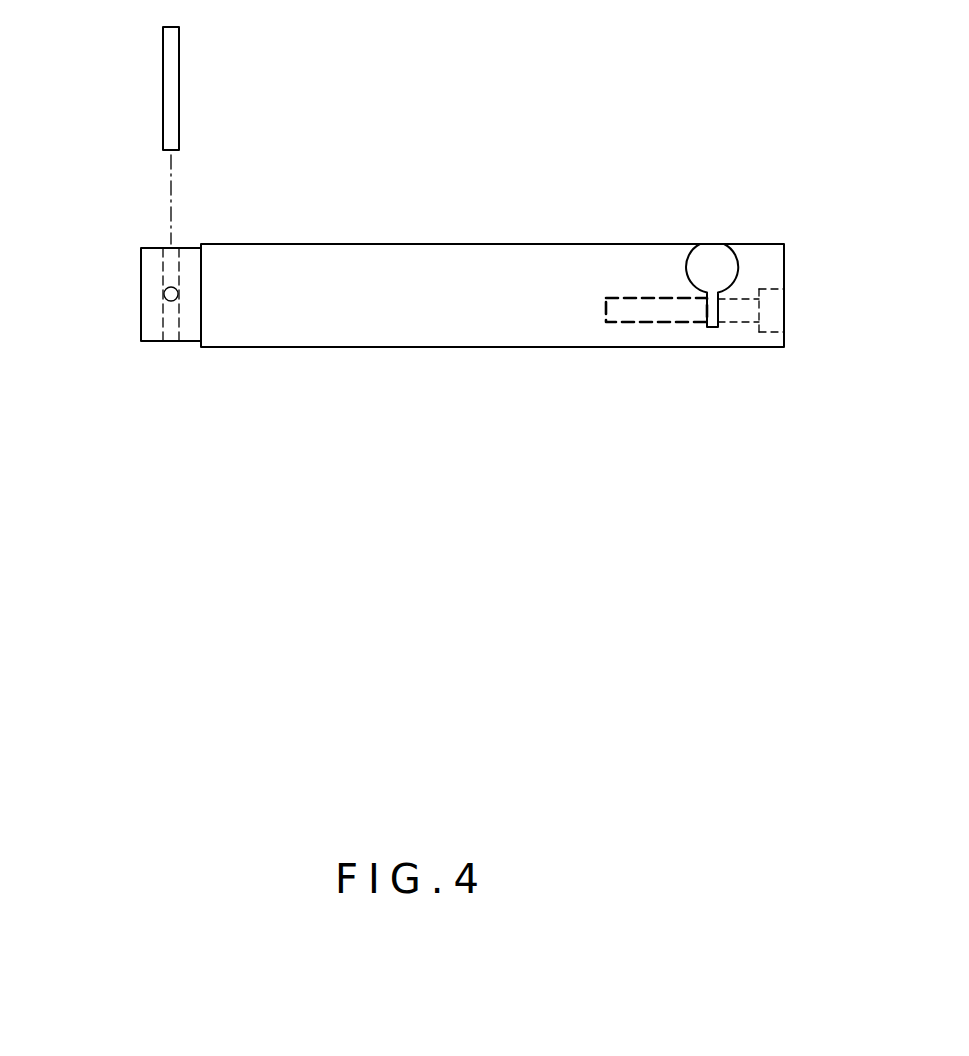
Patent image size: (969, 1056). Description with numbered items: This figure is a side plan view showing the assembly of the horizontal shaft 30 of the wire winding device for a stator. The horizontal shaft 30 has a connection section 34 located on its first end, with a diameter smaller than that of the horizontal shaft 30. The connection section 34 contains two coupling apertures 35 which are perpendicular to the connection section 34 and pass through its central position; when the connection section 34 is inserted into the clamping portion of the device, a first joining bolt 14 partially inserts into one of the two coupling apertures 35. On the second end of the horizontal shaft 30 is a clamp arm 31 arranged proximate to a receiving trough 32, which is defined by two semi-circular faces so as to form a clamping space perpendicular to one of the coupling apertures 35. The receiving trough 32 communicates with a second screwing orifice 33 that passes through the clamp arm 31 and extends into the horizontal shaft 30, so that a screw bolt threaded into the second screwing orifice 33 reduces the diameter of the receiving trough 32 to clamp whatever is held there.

The first joining bolt 14 is at (172, 91).
The horizontal shaft 30 is at (424, 265).
The clamp arm 31 is at (772, 263).
The receiving trough 32 is at (713, 265).
The second screwing orifice 33 is at (670, 313).
The connection section 34 is at (152, 315).
The coupling apertures 35 is at (178, 295).